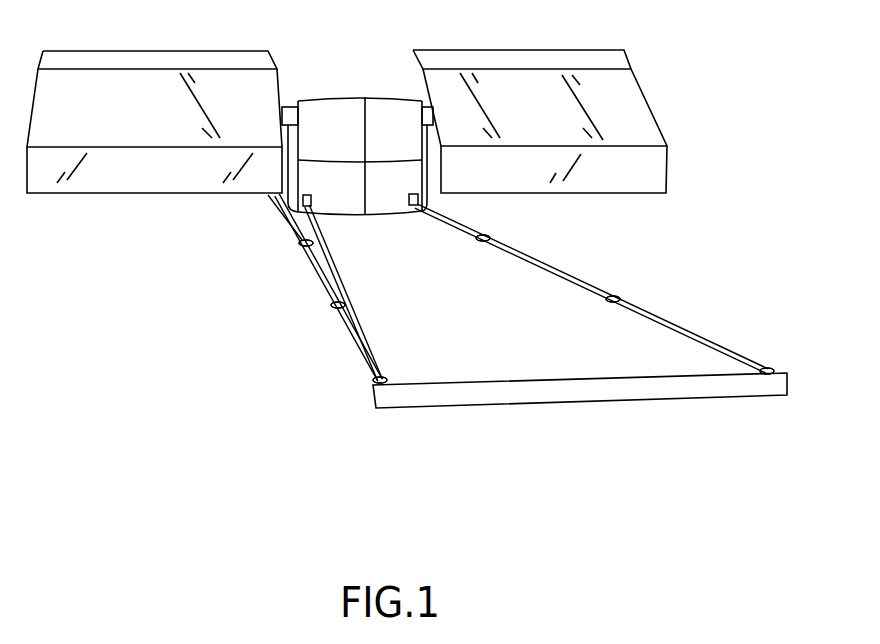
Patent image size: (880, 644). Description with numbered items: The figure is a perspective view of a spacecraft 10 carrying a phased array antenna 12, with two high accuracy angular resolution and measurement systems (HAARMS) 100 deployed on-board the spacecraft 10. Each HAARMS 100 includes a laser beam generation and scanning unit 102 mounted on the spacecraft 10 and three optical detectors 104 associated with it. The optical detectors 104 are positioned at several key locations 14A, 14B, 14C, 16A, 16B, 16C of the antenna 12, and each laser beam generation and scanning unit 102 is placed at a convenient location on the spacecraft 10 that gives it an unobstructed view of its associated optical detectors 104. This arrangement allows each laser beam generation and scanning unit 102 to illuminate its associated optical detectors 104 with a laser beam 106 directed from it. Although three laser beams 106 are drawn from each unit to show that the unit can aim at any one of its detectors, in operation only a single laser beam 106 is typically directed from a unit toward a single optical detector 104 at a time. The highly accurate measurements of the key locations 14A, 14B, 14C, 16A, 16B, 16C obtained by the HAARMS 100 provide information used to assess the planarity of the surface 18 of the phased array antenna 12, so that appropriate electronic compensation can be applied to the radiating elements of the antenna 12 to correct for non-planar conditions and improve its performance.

The spacecraft 10 is at (347, 100).
The phased array antenna 12 is at (537, 392).
The key location 14A is at (300, 252).
The key location 14B is at (334, 313).
The key location 14C is at (374, 386).
The key location 16A is at (484, 243).
The key location 16B is at (610, 304).
The key location 16C is at (762, 371).
The surface 18 is at (479, 364).
The high accuracy angular resolution and measurement system 100 is at (190, 288).
The laser beam generation and scanning unit 102 is at (311, 201).
The optical detector 104 is at (300, 244).
The laser beam 106 is at (307, 220).